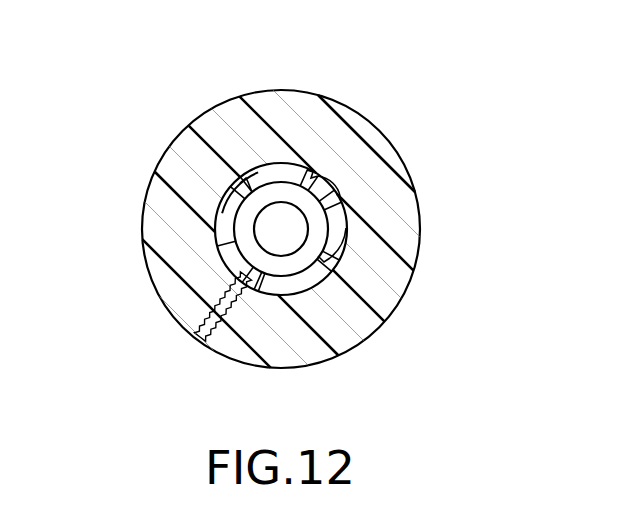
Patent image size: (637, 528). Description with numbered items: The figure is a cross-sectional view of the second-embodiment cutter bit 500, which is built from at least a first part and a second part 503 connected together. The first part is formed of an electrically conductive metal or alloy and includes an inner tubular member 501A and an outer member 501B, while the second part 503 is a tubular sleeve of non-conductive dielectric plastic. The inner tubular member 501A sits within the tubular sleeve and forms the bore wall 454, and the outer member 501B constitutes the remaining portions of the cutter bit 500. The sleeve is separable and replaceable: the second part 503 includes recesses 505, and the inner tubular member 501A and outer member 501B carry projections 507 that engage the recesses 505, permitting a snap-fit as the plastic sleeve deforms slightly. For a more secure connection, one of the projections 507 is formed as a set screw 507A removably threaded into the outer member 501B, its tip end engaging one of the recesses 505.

The cutter bit 500 is at (186, 96).
The inner tubular member 501A is at (243, 206).
The outer member 501B is at (193, 156).
The second part 503 is at (228, 232).
The bore wall 454 is at (280, 250).
The recesses 505 is at (312, 176).
The projections 507 is at (320, 173).
The set screw 507A is at (230, 326).